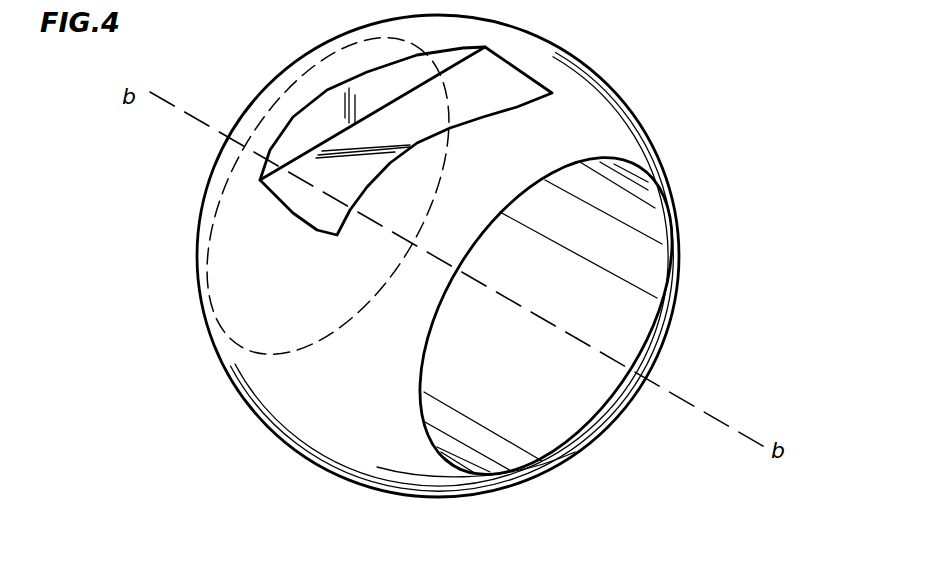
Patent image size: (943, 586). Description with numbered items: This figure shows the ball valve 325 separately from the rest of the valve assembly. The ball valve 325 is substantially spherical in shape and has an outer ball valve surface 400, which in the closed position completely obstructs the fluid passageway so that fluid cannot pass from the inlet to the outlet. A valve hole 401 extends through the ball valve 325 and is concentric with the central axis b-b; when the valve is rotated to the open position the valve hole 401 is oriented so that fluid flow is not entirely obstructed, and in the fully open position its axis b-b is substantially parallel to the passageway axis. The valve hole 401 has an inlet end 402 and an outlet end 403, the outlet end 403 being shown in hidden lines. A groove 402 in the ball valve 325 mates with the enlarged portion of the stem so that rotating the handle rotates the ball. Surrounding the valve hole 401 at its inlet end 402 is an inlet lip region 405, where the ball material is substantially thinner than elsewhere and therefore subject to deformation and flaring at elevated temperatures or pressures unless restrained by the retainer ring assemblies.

The ball valve 325 is at (642, 107).
The outer ball valve surface 400 is at (292, 410).
The valve hole 401 is at (607, 256).
The inlet end 402 is at (393, 115).
The outlet end 403 is at (222, 325).
The inlet lip region 405 is at (423, 410).